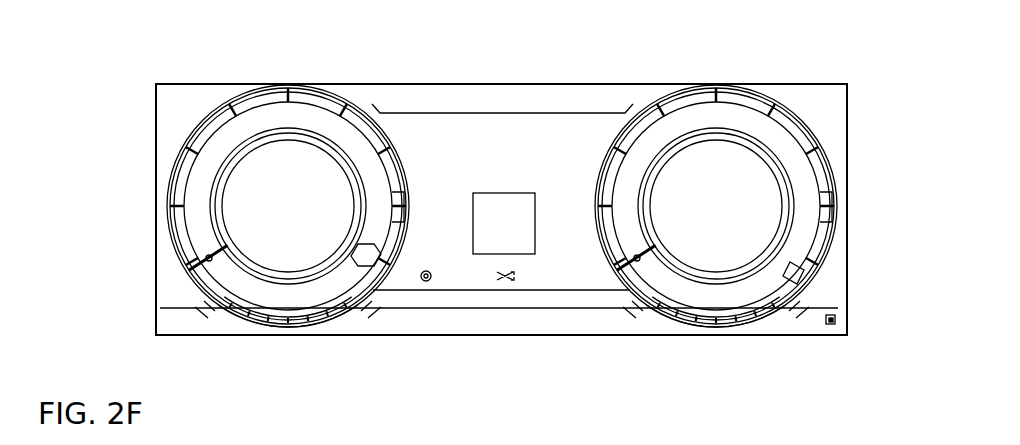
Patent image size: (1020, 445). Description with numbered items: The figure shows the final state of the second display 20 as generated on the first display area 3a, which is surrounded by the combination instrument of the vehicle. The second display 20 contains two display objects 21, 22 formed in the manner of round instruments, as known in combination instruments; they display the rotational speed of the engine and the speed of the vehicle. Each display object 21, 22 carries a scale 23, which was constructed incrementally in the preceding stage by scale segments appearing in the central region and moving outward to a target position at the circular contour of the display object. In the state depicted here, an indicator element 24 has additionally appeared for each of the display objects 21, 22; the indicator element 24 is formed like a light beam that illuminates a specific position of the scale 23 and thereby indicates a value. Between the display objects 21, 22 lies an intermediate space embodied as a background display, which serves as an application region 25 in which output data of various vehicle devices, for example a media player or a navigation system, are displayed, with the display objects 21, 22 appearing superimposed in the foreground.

The second display 20 is at (154, 111).
The first display area 3a is at (392, 83).
The display object 21 is at (307, 86).
The display object 22 is at (773, 100).
The scale 23 is at (216, 108).
The indicator element 24 is at (191, 263).
The application region 25 is at (568, 148).